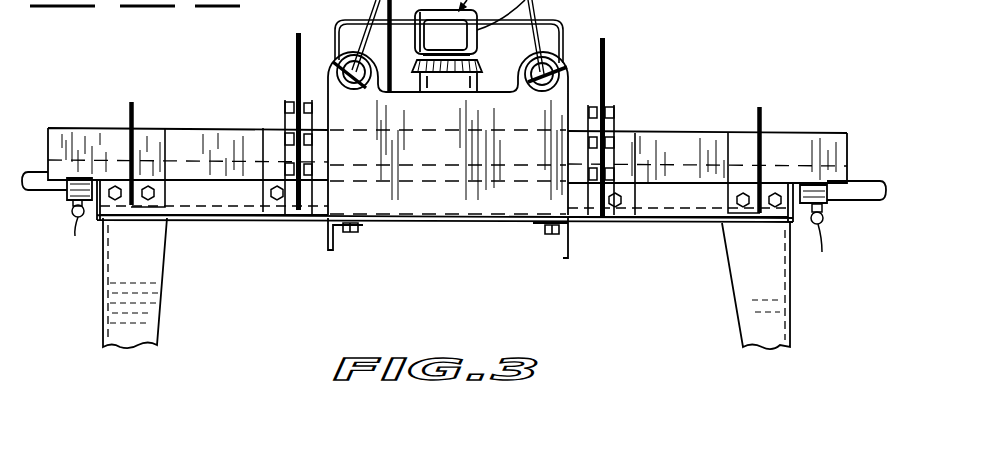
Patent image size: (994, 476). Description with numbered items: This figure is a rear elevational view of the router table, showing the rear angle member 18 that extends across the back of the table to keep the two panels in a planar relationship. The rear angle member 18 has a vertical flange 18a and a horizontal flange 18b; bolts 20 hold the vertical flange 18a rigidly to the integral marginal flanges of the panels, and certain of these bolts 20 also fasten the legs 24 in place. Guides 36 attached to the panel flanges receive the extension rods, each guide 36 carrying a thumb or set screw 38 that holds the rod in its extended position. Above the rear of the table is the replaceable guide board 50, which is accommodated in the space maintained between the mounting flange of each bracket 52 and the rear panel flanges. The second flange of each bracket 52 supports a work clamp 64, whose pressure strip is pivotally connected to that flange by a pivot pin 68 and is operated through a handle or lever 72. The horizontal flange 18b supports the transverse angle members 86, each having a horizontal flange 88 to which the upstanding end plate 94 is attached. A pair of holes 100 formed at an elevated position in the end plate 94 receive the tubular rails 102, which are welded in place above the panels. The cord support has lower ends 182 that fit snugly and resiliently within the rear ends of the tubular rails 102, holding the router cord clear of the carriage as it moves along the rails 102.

The rear angle member 18 is at (227, 222).
The vertical flange 18a is at (700, 207).
The horizontal flange 18b is at (257, 218).
The bolts 20 is at (152, 199).
The legs 24 is at (115, 323).
The guides 36 is at (65, 192).
The set screw 38 is at (450, 241).
The replaceable guide board 50 is at (80, 133).
The brackets 52 is at (258, 148).
The work clamp 64 is at (291, 79).
The pivot pin 68 is at (288, 112).
The handle or lever 72 is at (296, 58).
The transverse angle members 86 is at (326, 249).
The horizontal flange 88 is at (365, 228).
The end plates 94 is at (462, 200).
The holes 100 is at (378, 92).
The tubular rails 102 is at (372, 92).
The lower ends 182 is at (350, 33).